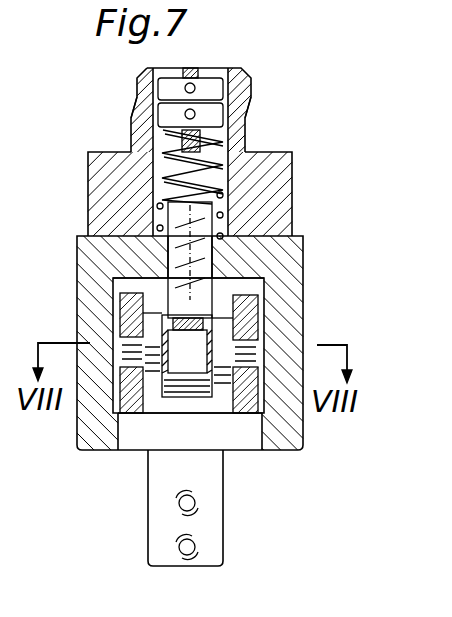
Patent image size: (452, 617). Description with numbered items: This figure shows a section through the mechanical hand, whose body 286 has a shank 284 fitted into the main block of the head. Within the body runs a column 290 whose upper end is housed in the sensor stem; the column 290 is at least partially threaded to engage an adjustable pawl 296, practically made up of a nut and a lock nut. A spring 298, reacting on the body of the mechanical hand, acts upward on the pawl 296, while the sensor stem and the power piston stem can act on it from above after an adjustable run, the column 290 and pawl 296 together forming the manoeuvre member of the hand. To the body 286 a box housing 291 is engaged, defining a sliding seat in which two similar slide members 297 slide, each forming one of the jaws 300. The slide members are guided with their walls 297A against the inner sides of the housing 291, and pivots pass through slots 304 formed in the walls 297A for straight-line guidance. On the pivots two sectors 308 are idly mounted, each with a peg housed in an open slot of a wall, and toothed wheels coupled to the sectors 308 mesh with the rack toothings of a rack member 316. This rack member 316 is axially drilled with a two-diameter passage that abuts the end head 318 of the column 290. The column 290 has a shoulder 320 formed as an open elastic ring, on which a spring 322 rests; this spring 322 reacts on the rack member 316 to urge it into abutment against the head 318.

The shank 284 is at (253, 85).
The shoulder 320 is at (246, 124).
The body 286 is at (258, 168).
The spring 322 is at (125, 197).
The box housing 291 is at (288, 257).
The column 290 is at (168, 297).
The adjustable pawl 296 is at (168, 90).
The spring 298 is at (167, 117).
The slide member 297 is at (240, 420).
The wall 297A is at (128, 400).
The rack member 316 is at (168, 303).
The sector 308 is at (225, 333).
The slot 304 is at (250, 352).
The end head 318 is at (185, 328).
The jaw 300 is at (215, 521).